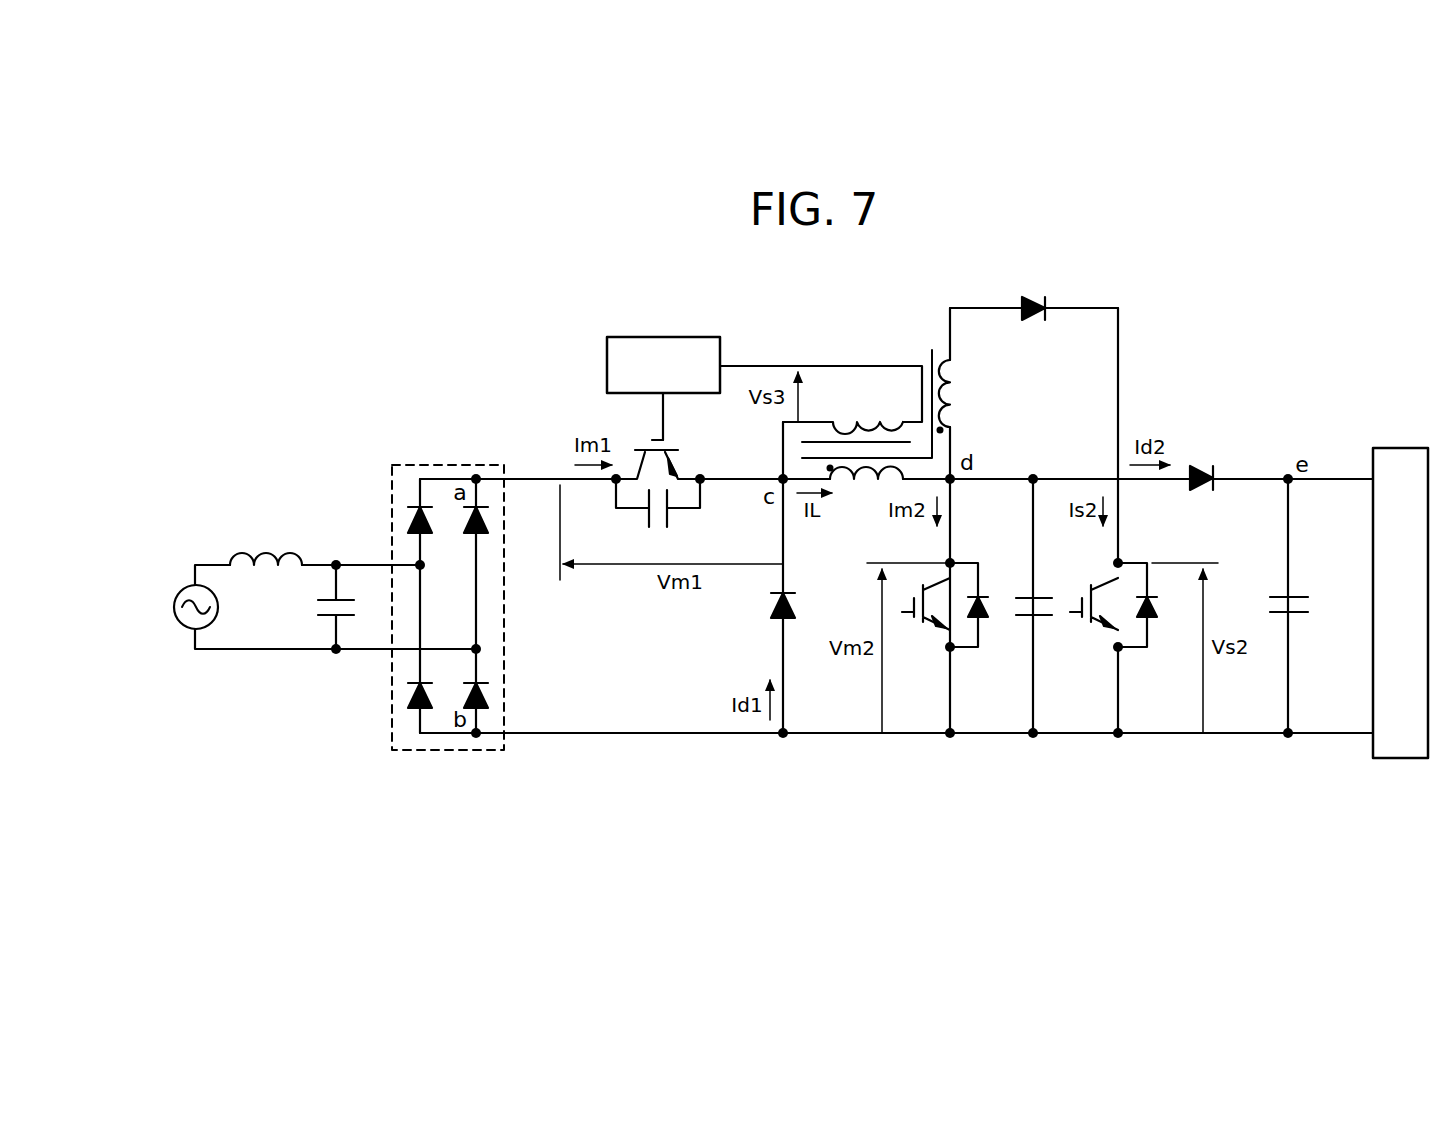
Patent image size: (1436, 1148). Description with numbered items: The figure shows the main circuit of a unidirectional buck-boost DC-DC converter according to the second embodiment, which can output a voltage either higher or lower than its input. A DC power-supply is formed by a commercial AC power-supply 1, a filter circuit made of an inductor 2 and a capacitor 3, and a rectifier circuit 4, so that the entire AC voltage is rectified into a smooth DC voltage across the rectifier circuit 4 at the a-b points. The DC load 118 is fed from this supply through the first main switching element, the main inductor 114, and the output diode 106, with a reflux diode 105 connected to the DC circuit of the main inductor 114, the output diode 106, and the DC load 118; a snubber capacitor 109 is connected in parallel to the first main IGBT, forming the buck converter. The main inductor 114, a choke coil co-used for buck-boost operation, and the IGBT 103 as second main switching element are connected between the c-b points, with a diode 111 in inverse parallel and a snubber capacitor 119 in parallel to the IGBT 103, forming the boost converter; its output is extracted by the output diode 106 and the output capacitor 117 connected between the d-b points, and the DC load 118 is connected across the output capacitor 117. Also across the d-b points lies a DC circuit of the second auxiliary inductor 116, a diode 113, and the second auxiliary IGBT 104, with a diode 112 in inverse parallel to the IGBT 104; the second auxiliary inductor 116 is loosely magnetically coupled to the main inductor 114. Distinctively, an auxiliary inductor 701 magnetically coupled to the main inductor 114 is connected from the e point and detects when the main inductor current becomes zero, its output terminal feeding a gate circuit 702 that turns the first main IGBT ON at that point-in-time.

The commercial AC power-supply 1 is at (173, 607).
The inductor 2 is at (274, 551).
The capacitor 3 is at (316, 607).
The rectifier circuit 4 is at (390, 717).
The gate circuit 702 is at (668, 338).
The snubber capacitor 109 is at (658, 527).
The auxiliary inductor 701 is at (858, 414).
The main inductor 114 is at (870, 492).
The second auxiliary inductor 116 is at (962, 392).
The diode 113 is at (1035, 304).
The reflux diode 105 is at (776, 618).
The second main switching element 103 is at (925, 625).
The diode 111 is at (984, 623).
The snubber capacitor 119 is at (1030, 591).
The second auxiliary switching element 104 is at (1092, 625).
The diode 112 is at (1150, 623).
The output diode 106 is at (1205, 490).
The output capacitor 117 is at (1297, 595).
The DC load 118 is at (1392, 448).